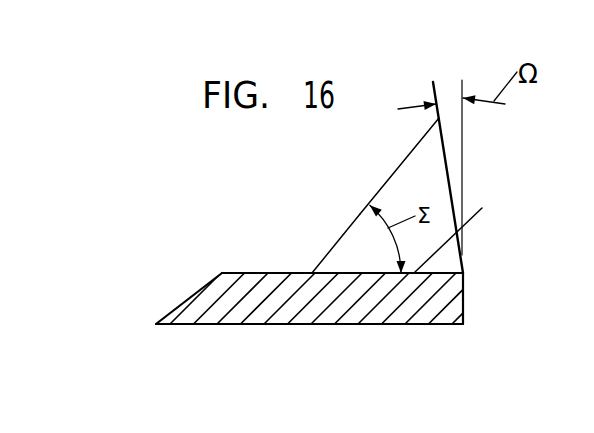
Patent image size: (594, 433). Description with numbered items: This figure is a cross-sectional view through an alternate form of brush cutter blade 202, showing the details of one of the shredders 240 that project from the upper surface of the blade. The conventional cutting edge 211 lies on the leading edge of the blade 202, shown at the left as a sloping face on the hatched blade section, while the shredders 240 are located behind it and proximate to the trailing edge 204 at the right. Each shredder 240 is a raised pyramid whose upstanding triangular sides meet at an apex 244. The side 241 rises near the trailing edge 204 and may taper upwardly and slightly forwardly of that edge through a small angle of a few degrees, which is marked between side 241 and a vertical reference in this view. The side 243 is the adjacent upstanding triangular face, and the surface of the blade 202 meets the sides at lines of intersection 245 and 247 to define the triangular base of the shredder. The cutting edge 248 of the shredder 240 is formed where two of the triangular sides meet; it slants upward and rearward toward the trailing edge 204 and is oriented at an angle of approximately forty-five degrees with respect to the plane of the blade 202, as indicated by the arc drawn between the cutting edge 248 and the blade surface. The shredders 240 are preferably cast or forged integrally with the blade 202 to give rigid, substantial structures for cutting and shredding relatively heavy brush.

The brush cutter blade 202 is at (207, 237).
The trailing edge 204 is at (465, 296).
The cutting edge 211 is at (192, 297).
The shredders 240 is at (381, 174).
The triangular side 241 is at (452, 187).
The triangular side 243 is at (435, 163).
The apex 244 is at (439, 118).
The line of intersection 245 is at (463, 272).
The line of intersection 247 is at (475, 232).
The cutting edge 248 is at (340, 240).